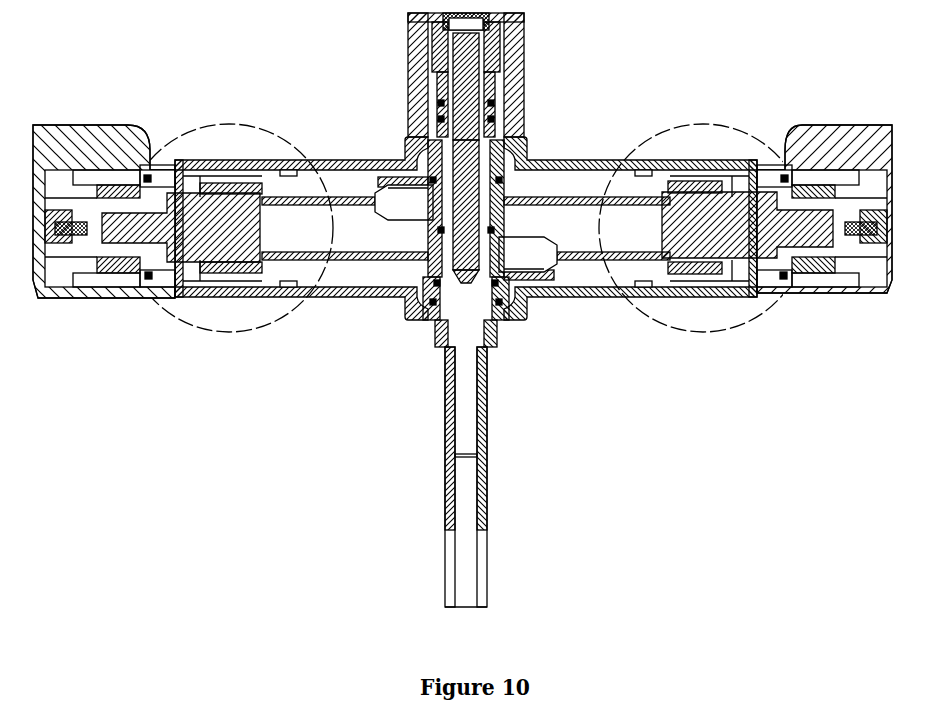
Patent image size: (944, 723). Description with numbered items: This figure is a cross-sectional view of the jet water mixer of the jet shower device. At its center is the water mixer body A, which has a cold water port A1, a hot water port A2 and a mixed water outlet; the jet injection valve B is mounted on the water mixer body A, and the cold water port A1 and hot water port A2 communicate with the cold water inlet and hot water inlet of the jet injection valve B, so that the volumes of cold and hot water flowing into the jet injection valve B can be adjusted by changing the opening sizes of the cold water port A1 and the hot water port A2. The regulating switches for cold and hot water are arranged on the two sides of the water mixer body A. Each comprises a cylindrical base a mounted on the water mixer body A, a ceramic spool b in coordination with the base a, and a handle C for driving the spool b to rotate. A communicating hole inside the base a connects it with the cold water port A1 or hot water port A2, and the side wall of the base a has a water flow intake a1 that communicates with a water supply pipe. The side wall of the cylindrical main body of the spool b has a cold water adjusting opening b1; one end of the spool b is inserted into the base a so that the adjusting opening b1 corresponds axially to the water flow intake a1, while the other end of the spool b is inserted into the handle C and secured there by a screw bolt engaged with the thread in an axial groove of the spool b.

The handle C is at (98, 153).
The base a is at (257, 185).
The water flow intake a1 is at (210, 193).
The spool b is at (208, 247).
The cold water adjusting opening b1 is at (233, 273).
The water mixer body A is at (466, 373).
The cold water port A1 is at (398, 203).
The hot water port A2 is at (518, 257).
The jet injection valve B is at (504, 76).